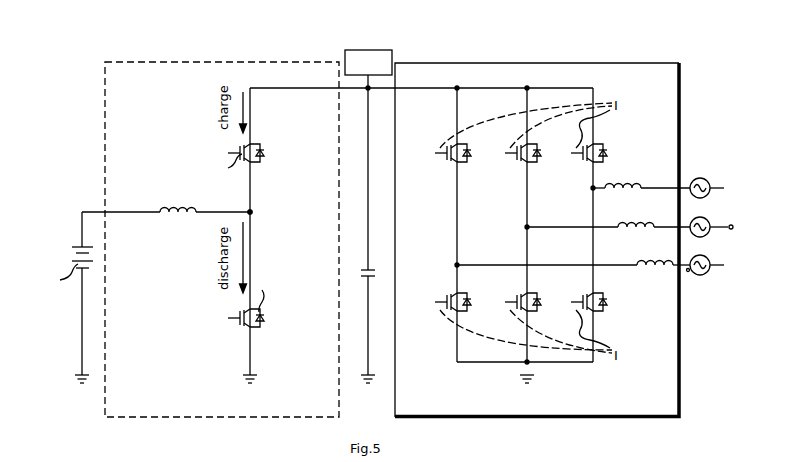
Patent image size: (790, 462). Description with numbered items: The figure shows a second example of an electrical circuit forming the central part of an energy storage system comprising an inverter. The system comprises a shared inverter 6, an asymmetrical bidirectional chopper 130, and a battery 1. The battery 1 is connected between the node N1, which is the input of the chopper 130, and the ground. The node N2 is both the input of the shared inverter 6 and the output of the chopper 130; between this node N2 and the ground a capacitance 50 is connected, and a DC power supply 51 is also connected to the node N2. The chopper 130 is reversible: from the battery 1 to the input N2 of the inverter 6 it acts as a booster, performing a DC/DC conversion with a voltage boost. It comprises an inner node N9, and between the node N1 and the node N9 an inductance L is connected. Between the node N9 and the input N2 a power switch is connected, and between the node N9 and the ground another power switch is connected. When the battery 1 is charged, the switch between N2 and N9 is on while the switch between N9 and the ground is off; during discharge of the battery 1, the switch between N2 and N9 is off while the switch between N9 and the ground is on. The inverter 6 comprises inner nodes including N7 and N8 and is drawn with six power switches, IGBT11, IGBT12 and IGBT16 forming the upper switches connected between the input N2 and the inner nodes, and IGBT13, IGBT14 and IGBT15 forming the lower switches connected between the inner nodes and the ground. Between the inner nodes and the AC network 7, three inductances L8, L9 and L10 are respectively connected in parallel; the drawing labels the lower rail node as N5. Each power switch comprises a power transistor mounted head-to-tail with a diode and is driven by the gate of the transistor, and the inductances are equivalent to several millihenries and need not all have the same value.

The battery 1 is at (64, 274).
The shared inverter 6 is at (560, 418).
The AC network 7 is at (684, 283).
The capacitance 50 is at (366, 276).
The DC power supply 51 is at (362, 50).
The asymmetrical bidirectional chopper 130 is at (218, 418).
The input node of the chopper N1 is at (82, 212).
The input node of the inverter N2 is at (338, 62).
The node N5 is at (455, 265).
The inner node of the inverter N7 is at (524, 227).
The inner node of the inverter N8 is at (591, 188).
The inner node of the chopper N9 is at (252, 214).
The inductance L is at (178, 220).
The inductor L8 is at (647, 180).
The inductor L9 is at (654, 218).
The inductor L10 is at (663, 256).
The IGBT 11 IGBT11 is at (435, 165).
The IGBT 12 IGBT12 is at (505, 165).
The IGBT 13 IGBT13 is at (434, 295).
The IGBT 14 IGBT14 is at (504, 295).
The IGBT 15 IGBT15 is at (572, 295).
The IGBT 16 IGBT16 is at (572, 165).